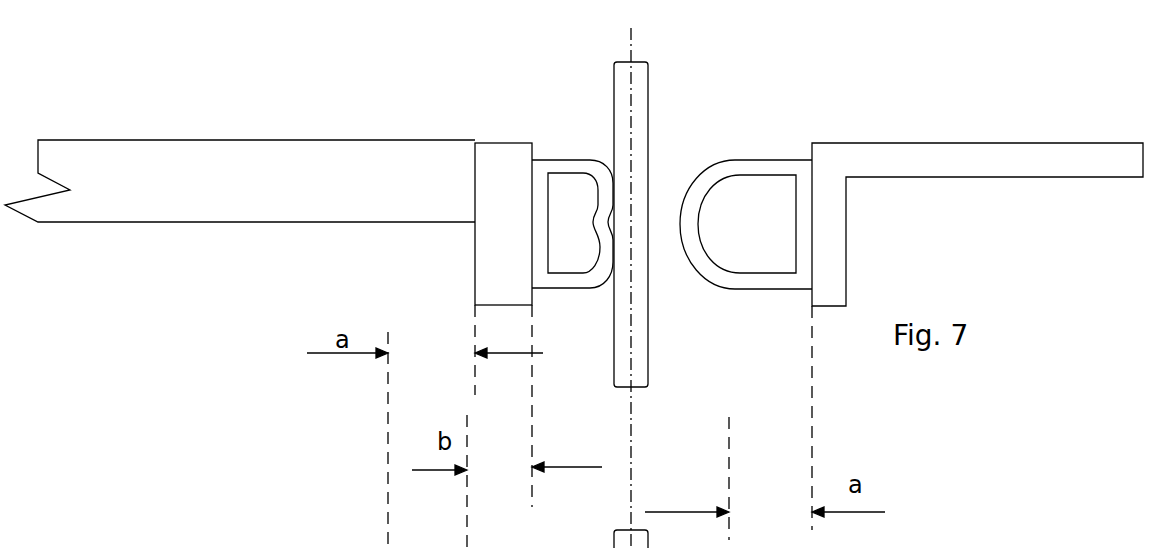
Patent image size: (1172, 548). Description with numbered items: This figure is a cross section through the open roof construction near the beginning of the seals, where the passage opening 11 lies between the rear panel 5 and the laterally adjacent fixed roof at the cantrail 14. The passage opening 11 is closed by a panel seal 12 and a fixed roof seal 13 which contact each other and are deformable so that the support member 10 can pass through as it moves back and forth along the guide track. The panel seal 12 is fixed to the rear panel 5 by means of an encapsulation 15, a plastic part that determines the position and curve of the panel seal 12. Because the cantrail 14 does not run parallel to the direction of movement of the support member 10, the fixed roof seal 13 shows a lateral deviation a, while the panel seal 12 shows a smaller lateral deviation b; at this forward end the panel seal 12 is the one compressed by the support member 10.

The rear panel 5 is at (235, 167).
The support member 10 is at (640, 80).
The passage opening 11 is at (667, 224).
The panel seal 12 is at (568, 160).
The fixed roof seal 13 is at (763, 170).
The cantrail 14 is at (880, 163).
The encapsulation 15 is at (497, 163).